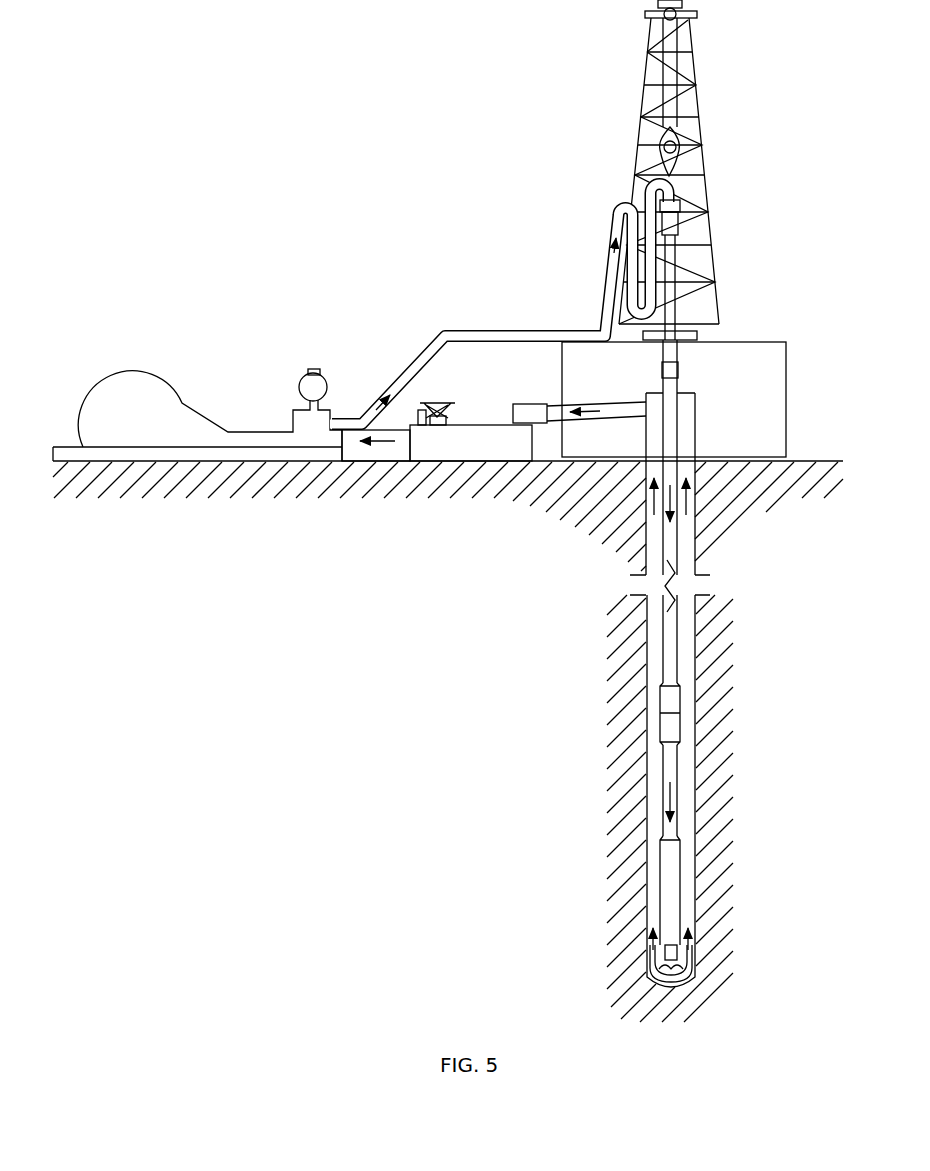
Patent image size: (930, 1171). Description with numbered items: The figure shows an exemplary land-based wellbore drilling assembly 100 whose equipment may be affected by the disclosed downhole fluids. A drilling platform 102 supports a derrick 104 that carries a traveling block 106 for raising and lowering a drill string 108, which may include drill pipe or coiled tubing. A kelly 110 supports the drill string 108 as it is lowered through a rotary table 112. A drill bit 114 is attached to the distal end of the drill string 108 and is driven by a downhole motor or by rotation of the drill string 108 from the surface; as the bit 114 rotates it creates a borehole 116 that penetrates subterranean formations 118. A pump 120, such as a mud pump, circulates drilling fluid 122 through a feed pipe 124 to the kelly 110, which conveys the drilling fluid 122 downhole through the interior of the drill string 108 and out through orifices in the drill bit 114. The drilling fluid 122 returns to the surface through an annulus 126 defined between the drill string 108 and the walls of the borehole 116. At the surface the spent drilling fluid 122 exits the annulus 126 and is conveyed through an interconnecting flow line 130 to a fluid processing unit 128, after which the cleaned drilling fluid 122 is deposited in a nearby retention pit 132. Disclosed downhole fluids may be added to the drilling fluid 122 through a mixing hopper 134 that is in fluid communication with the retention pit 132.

The wellbore drilling assembly 100 is at (408, 78).
The drilling platform 102 is at (787, 356).
The derrick 104 is at (700, 97).
The traveling block 106 is at (684, 139).
The drill string 108 is at (676, 560).
The kelly 110 is at (680, 256).
The rotary table 112 is at (698, 336).
The drill bit 114 is at (697, 955).
The borehole 116 is at (695, 648).
The subterranean formations 118 is at (448, 742).
The pump 120 is at (197, 415).
The drilling fluid 122 is at (358, 420).
The feed pipe 124 is at (444, 332).
The annulus 126 is at (687, 795).
The fluid processing unit 128 is at (527, 404).
The flow line 130 is at (633, 418).
The retention pit 132 is at (471, 432).
The mixing hopper 134 is at (417, 445).